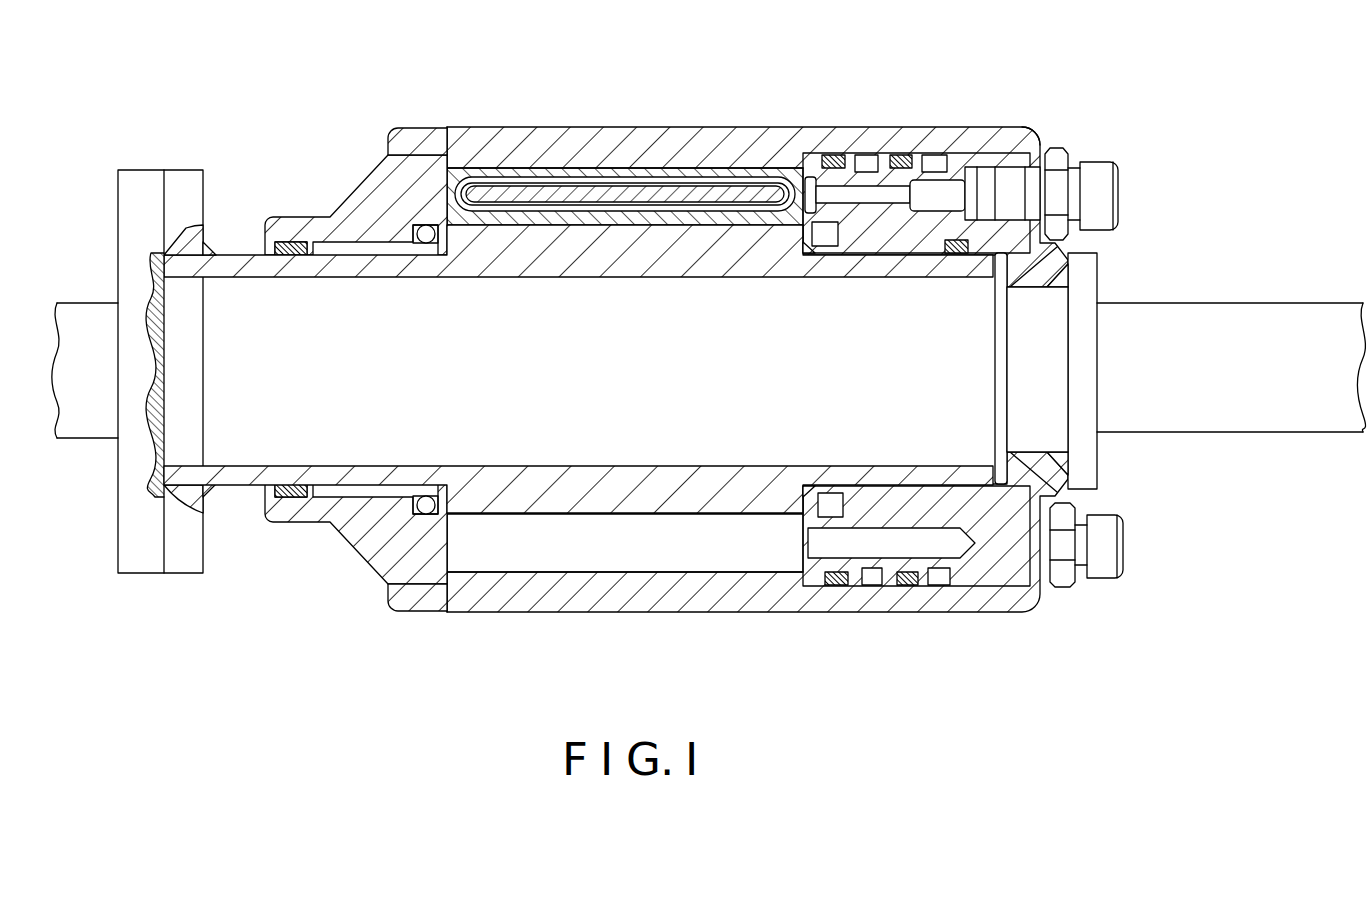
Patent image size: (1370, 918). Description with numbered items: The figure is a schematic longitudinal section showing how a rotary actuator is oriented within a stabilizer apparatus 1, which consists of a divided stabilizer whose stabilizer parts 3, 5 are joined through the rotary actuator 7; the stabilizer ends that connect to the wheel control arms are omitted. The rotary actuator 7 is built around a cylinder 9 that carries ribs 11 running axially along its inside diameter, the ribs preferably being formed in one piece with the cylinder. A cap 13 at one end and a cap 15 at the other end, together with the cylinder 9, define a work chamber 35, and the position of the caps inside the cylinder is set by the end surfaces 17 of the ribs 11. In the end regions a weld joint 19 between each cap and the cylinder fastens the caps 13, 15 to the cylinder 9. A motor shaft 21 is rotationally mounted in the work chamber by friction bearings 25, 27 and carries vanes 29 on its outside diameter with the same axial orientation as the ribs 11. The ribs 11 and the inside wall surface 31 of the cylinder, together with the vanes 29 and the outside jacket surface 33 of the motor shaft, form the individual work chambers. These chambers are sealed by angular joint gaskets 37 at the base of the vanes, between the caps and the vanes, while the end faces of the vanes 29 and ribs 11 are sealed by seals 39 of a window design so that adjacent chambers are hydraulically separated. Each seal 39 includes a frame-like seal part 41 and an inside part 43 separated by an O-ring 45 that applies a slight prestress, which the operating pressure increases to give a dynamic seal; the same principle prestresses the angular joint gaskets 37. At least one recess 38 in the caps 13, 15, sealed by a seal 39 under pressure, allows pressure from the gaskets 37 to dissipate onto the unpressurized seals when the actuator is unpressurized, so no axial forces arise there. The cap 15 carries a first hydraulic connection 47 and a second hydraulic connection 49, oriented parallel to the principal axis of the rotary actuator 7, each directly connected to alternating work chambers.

The stabilizer apparatus 1 is at (202, 648).
The stabilizer part 3 is at (88, 456).
The stabilizer part 5 is at (1288, 442).
The rotary actuator 7 is at (644, 640).
The cylinder 9 is at (477, 618).
The ribs 11 is at (653, 554).
The cap 13 is at (343, 213).
The cap 15 is at (1030, 573).
The end surfaces 17 is at (447, 235).
The weld joint 19 is at (397, 137).
The motor shaft 21 is at (180, 308).
The friction bearing 25 is at (922, 247).
The friction bearing 27 is at (320, 246).
The vanes 29 is at (432, 213).
The inside wall surface 31 is at (588, 152).
The outside jacket surface 33 is at (561, 517).
The work chamber 35 is at (722, 554).
The angular joint gaskets 37 is at (426, 244).
The recess 38 is at (398, 143).
The seals 39 is at (692, 152).
The frame-like seal part 41 is at (542, 174).
The inside part 43 is at (646, 192).
The O-ring 45 is at (759, 175).
The first hydraulic connection 47 is at (1062, 272).
The second hydraulic connection 49 is at (1115, 565).